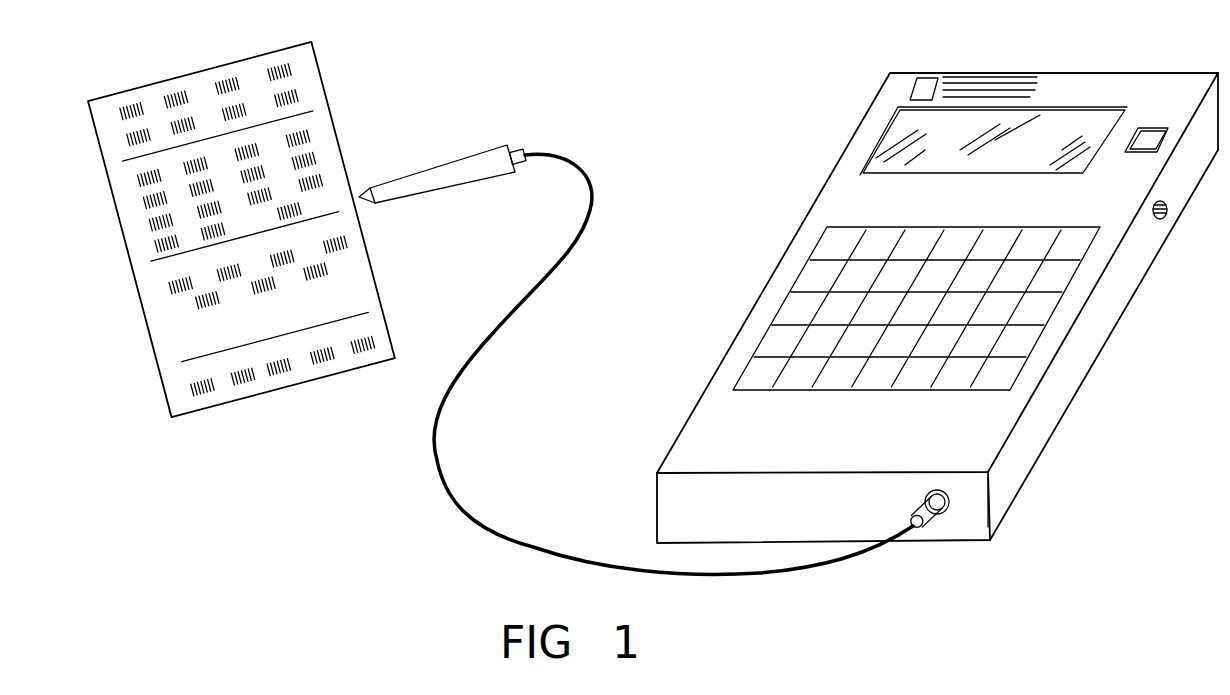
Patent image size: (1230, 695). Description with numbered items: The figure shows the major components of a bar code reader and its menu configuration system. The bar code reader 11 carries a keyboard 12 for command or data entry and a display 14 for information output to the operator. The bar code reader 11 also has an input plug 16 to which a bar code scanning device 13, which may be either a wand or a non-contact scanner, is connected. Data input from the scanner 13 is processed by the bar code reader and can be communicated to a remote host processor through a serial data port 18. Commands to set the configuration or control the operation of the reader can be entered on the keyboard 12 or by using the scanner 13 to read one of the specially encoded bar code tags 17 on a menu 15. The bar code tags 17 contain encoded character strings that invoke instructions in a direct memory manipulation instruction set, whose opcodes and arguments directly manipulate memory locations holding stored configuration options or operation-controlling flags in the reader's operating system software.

The bar code reader 11 is at (842, 148).
The keyboard 12 is at (777, 313).
The bar code scanning device 13 is at (430, 170).
The display 14 is at (1008, 157).
The menu 15 is at (311, 42).
The input plug 16 is at (948, 522).
The bar code tags 17 is at (132, 142).
The serial data port 18 is at (1161, 220).